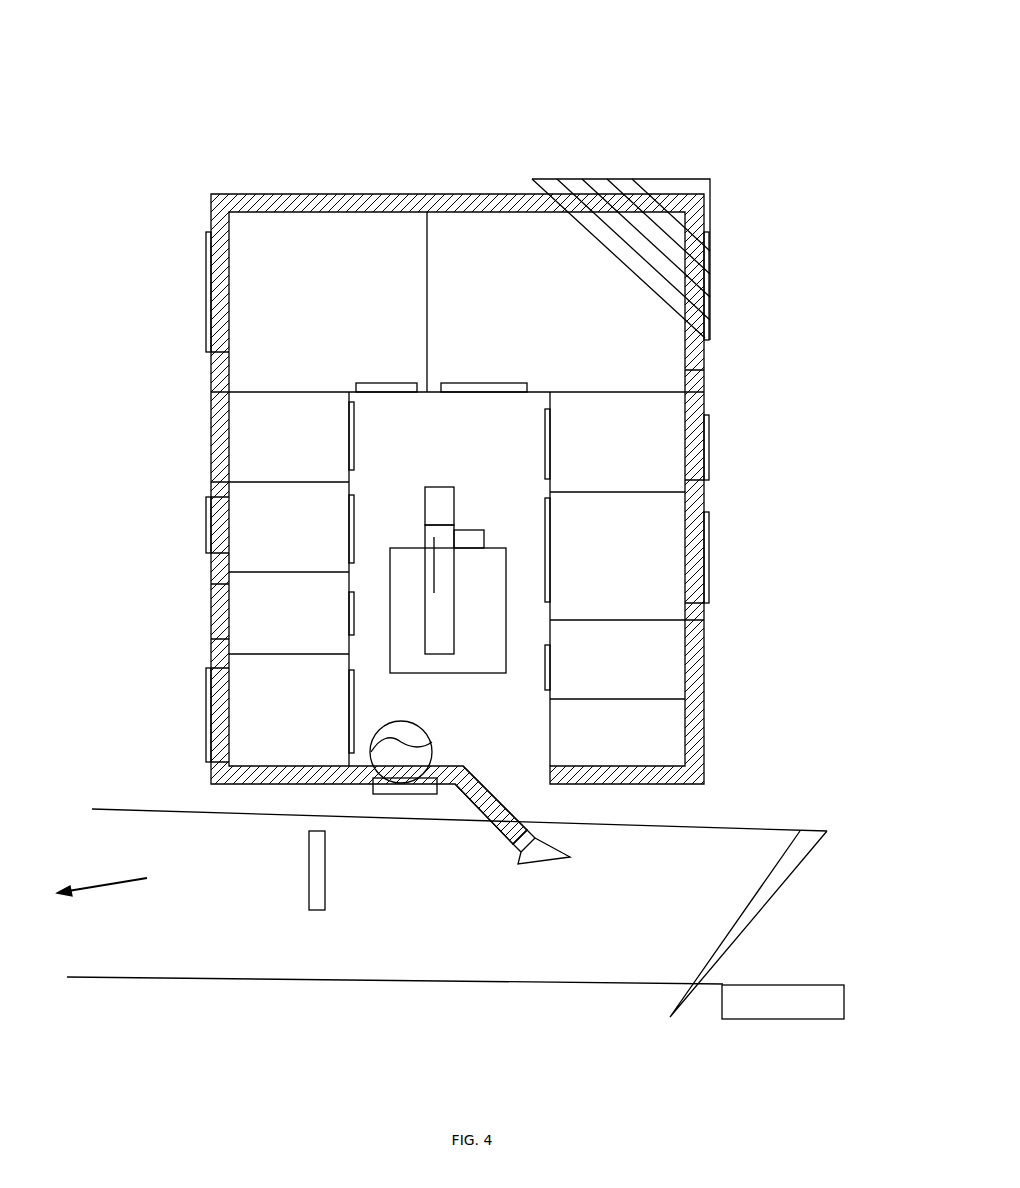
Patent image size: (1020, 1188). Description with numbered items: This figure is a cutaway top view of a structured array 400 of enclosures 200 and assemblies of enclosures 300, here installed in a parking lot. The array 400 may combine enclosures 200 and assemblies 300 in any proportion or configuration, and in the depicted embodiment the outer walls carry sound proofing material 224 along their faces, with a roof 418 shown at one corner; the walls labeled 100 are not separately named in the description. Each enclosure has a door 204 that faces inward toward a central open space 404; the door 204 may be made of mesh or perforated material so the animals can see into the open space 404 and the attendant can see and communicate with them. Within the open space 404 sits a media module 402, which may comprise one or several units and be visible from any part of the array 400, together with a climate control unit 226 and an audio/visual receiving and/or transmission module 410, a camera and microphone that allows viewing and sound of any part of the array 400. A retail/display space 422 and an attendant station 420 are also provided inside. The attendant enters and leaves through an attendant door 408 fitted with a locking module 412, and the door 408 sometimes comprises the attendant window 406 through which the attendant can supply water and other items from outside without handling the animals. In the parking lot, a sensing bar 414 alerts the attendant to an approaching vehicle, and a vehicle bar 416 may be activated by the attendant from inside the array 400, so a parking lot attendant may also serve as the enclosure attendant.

The structured array 400 is at (312, 57).
The wall structure 100 is at (209, 302).
The assembly of enclosures 300 is at (332, 240).
The enclosure 200 is at (243, 615).
The door 204 is at (375, 392).
The sound proofing material 224 is at (262, 194).
The roof 418 is at (655, 185).
The open space 404 is at (432, 470).
The media module 402 is at (444, 511).
The audio/visual receiving and/or transmission module 410 is at (472, 540).
The retail/display space 422 is at (497, 607).
The climate control unit 226 is at (447, 635).
The attendant station 420 is at (415, 750).
The attendant window 406 is at (405, 794).
The attendant door 408 is at (490, 828).
The locking module 412 is at (545, 848).
The vehicle bar 416 is at (800, 857).
The sensing bar 414 is at (315, 905).